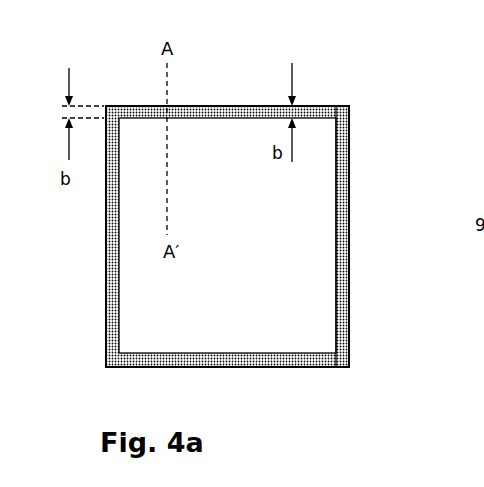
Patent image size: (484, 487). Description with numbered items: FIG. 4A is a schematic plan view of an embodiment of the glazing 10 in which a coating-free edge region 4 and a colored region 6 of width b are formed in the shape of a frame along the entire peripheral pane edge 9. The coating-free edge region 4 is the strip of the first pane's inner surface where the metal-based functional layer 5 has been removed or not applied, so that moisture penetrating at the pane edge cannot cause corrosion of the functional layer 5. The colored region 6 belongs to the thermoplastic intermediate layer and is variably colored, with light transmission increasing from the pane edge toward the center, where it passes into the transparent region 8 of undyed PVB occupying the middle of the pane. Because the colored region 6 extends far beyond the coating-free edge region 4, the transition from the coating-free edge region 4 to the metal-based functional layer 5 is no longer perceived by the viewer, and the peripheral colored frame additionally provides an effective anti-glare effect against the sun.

The coating-free edge region 4 is at (340, 105).
The metal-based functional layer 5 is at (272, 235).
The colored region 6 is at (250, 205).
The transparent region 8 is at (272, 283).
The peripheral pane edge 9 is at (352, 234).
The glazing 10 is at (353, 138).